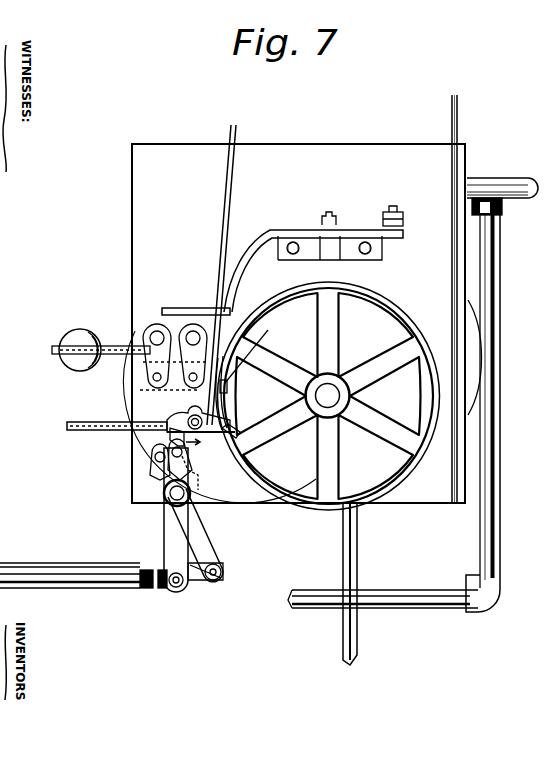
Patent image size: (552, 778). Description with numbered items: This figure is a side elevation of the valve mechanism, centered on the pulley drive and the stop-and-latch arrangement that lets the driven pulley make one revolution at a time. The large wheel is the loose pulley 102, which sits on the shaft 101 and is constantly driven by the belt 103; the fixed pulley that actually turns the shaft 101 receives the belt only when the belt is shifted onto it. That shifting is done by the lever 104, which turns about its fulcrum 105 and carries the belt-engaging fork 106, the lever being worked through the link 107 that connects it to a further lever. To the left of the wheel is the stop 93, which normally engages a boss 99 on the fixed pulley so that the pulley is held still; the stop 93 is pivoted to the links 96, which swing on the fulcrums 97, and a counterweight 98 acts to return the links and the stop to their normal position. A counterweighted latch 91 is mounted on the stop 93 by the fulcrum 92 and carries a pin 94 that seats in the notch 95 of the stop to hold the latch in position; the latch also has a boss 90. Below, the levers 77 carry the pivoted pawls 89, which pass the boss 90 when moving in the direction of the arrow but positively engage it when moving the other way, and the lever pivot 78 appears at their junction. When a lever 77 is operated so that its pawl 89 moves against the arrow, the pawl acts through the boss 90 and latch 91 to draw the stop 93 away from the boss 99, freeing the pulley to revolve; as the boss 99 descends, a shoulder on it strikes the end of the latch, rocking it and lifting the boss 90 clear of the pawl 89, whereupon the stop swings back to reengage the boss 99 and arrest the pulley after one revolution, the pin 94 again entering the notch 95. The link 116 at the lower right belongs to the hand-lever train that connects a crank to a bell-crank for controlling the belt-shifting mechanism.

The levers 77 is at (164, 547).
The pivot 78 is at (163, 502).
The pawls 89 is at (155, 447).
The boss 90 is at (147, 438).
The counterweighted latch 91 is at (143, 423).
The fulcrum 92 is at (188, 416).
The stop 93 is at (147, 390).
The pin 94 is at (242, 376).
The notch 95 is at (227, 427).
The links 96 is at (147, 362).
The fulcrums 97 is at (190, 333).
The counterweight 98 is at (68, 337).
The boss 99 is at (259, 351).
The shaft 101 is at (335, 395).
The loose pulley 102 is at (398, 296).
The belt 103 is at (222, 181).
The lever 104 is at (290, 232).
The fulcrum 105 is at (330, 211).
The belt-engaging fork 106 is at (184, 306).
The link 107 is at (398, 212).
The link 116 is at (358, 548).